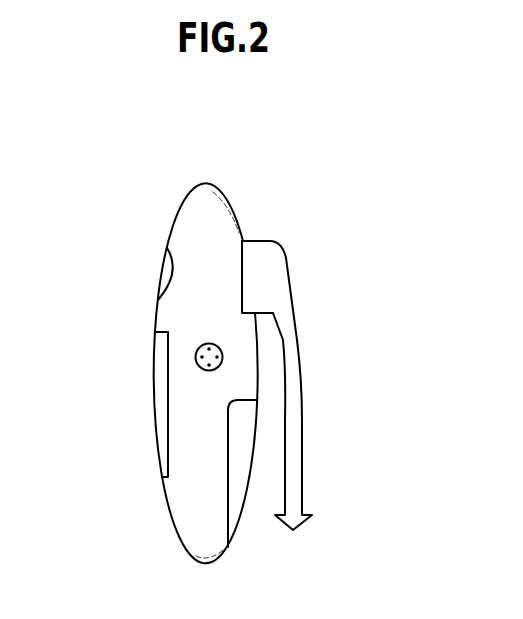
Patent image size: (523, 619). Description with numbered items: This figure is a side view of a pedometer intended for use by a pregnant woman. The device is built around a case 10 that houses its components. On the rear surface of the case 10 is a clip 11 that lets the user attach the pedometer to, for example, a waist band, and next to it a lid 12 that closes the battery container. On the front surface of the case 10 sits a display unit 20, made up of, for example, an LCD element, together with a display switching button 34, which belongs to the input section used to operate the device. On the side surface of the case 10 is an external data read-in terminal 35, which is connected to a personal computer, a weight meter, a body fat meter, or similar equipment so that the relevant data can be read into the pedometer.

The case 10 is at (195, 208).
The clip 11 is at (288, 325).
The lid 12 is at (243, 490).
The display unit 20 is at (158, 418).
The display switching button 34 is at (165, 278).
The external data read-in terminal 35 is at (218, 357).